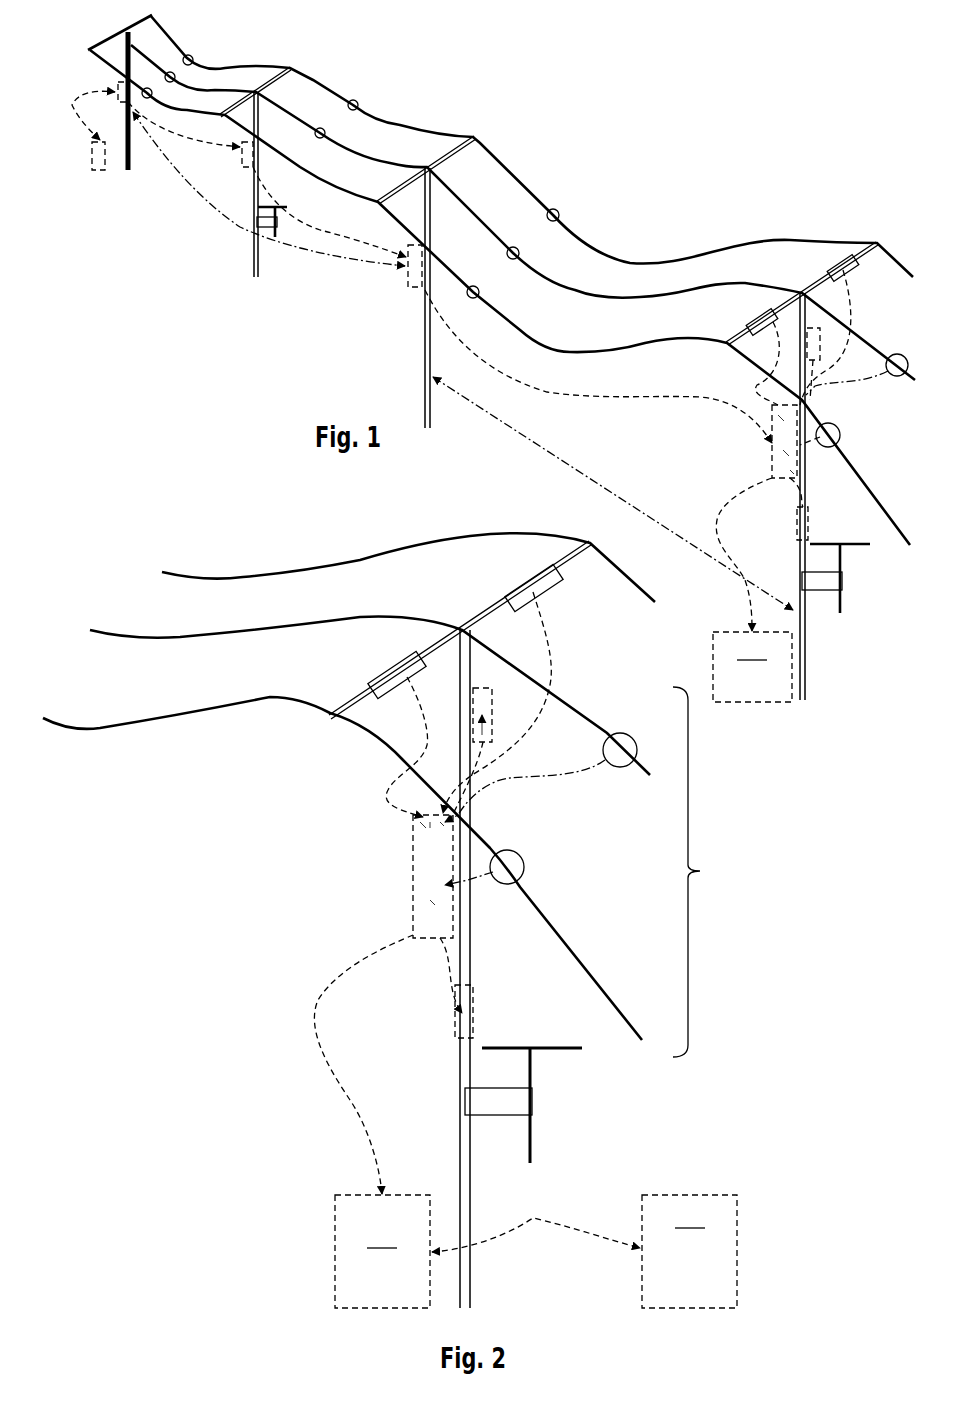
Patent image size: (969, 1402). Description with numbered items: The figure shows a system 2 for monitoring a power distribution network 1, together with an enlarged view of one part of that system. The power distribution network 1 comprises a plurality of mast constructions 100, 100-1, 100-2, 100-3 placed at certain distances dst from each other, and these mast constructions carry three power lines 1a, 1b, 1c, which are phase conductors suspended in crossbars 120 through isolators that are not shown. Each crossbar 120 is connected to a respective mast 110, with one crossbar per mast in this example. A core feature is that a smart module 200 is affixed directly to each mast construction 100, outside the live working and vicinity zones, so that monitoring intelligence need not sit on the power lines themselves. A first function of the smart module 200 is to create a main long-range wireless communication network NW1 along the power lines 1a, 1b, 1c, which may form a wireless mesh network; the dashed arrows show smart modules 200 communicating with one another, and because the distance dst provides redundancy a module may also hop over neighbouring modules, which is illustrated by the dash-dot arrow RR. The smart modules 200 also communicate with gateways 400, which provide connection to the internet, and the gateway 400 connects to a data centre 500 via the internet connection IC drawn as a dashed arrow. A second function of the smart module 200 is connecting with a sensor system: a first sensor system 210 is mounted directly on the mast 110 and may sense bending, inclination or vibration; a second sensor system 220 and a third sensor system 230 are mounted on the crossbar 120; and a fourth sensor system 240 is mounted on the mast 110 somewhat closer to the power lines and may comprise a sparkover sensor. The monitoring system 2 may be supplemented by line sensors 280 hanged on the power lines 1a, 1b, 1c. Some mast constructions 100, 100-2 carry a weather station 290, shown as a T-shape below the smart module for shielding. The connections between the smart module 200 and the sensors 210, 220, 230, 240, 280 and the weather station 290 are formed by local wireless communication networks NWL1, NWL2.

In FIG. 1, the power distribution network 1 is at (637, 130).
In FIG. 2, the power distribution network 1 is at (142, 553).
In FIG. 1, the power line 1a is at (604, 246).
In FIG. 2, the power line 1a is at (240, 577).
In FIG. 1, the power line 1b is at (560, 287).
In FIG. 2, the power line 1b is at (127, 637).
In FIG. 1, the power line 1c is at (510, 330).
In FIG. 2, the power line 1c is at (103, 728).
In FIG. 1, the monitoring system 2 is at (751, 190).
In FIG. 2, the monitoring system 2 is at (702, 872).
In FIG. 1, the mast construction 100 is at (791, 275).
In FIG. 2, the mast construction 100 is at (435, 600).
In FIG. 1, the mast construction 100-1 is at (447, 170).
In FIG. 1, the mast construction 100-2 is at (264, 94).
In FIG. 1, the mast construction 100-3 is at (122, 40).
In FIG. 2, the mast 110 is at (470, 950).
In FIG. 2, the crossbar 120 is at (477, 621).
In FIG. 1, the smart module 200 is at (118, 88).
In FIG. 2, the smart module 200 is at (413, 882).
In FIG. 2, the first sensor system 210 is at (472, 1012).
In FIG. 2, the second sensor system 220 is at (395, 672).
In FIG. 2, the third sensor system 230 is at (530, 585).
In FIG. 2, the fourth sensor system 240 is at (492, 705).
In FIG. 1, the line sensor 280 is at (360, 107).
In FIG. 2, the line sensor 280 is at (634, 745).
In FIG. 2, the weather station 290 is at (557, 1047).
In FIG. 1, the gateway 400 is at (100, 170).
In FIG. 2, the gateway 400 is at (382, 1251).
In FIG. 2, the data centre 500 is at (689, 1251).
In FIG. 1, the main long-range wireless communication network NW1 is at (708, 528).
In FIG. 2, the main long-range wireless communication network NW1 is at (350, 1097).
In FIG. 2, the local wireless communication network NWL1 is at (556, 668).
In FIG. 2, the local wireless communication network NWL2 is at (560, 780).
In FIG. 1, the node hopping or rerouting arrow RR is at (200, 200).
In FIG. 1, the distance between mast constructions dst is at (613, 493).
In FIG. 2, the internet connection IC is at (536, 1222).